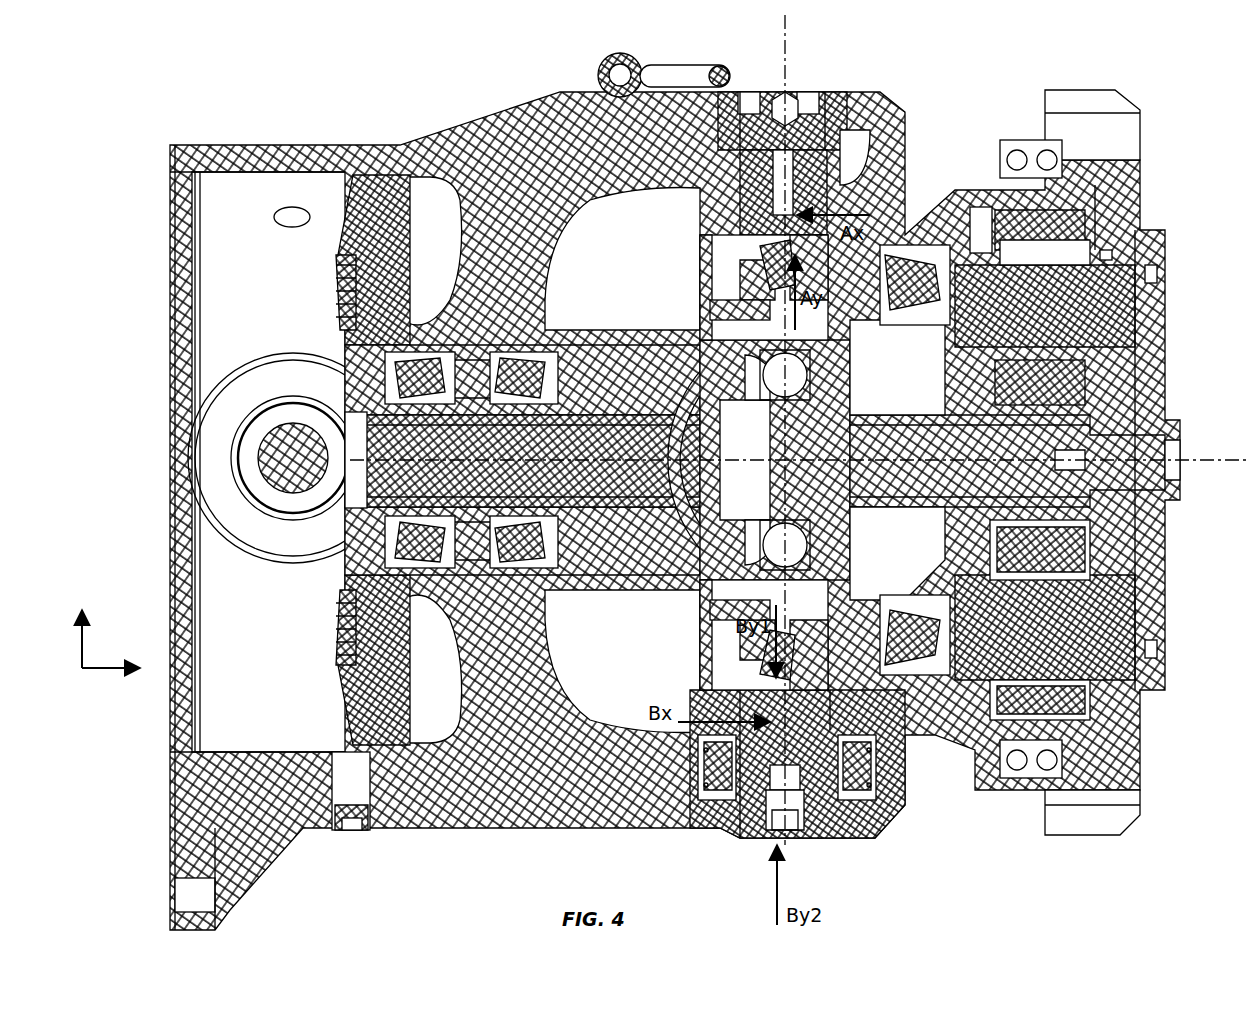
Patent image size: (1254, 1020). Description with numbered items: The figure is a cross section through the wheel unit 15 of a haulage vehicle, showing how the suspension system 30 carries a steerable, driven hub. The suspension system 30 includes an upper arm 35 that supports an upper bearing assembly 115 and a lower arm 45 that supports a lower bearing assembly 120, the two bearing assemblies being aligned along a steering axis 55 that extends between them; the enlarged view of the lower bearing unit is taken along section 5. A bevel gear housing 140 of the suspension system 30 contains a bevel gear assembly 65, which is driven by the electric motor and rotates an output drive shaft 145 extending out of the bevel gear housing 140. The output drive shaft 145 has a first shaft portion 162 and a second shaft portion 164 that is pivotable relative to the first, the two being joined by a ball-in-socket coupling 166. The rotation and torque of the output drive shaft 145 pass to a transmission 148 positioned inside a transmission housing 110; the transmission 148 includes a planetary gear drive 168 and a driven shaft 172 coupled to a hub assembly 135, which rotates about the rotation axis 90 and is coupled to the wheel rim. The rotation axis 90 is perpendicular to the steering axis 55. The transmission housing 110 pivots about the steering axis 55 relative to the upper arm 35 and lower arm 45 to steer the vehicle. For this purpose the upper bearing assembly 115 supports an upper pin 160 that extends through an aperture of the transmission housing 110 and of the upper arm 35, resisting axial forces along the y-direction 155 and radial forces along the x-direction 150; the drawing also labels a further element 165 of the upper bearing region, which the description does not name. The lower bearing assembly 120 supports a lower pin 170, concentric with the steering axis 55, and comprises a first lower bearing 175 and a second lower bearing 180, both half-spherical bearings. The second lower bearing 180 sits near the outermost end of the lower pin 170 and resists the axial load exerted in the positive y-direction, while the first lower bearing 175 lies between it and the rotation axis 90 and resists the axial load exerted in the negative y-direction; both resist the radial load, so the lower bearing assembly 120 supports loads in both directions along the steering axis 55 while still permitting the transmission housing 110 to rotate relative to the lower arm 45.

The section 5- 5 is at (788, 30).
The wheel unit 15 is at (393, 80).
The suspension system 30 is at (250, 893).
The upper arm 35 is at (567, 140).
The lower arm 45 is at (545, 800).
The steering axis 55 is at (780, 78).
The bevel gear assembly 65 is at (368, 205).
The rotation axis 90 is at (1193, 460).
The transmission housing 110 is at (953, 757).
The upper bearing assembly 115 is at (752, 82).
The lower bearing assembly 120 is at (830, 840).
The hub assembly 135 is at (1160, 705).
The bevel gear housing 140 is at (315, 812).
The output drive shaft 145 is at (453, 485).
The transmission 148 is at (1042, 575).
The x-direction 150 is at (114, 668).
The y-direction 155 is at (86, 632).
The upper pin 160 is at (800, 130).
The first shaft portion 162 is at (630, 440).
The second shaft portion 164 is at (920, 435).
The bearing race 165 is at (858, 172).
The ball-in-socket coupling 166 is at (700, 360).
The planetary gear drive 168 is at (1058, 700).
The lower pin 170 is at (748, 832).
The driven shaft 172 is at (862, 600).
The first lower bearing 175 is at (708, 750).
The second lower bearing 180 is at (868, 790).